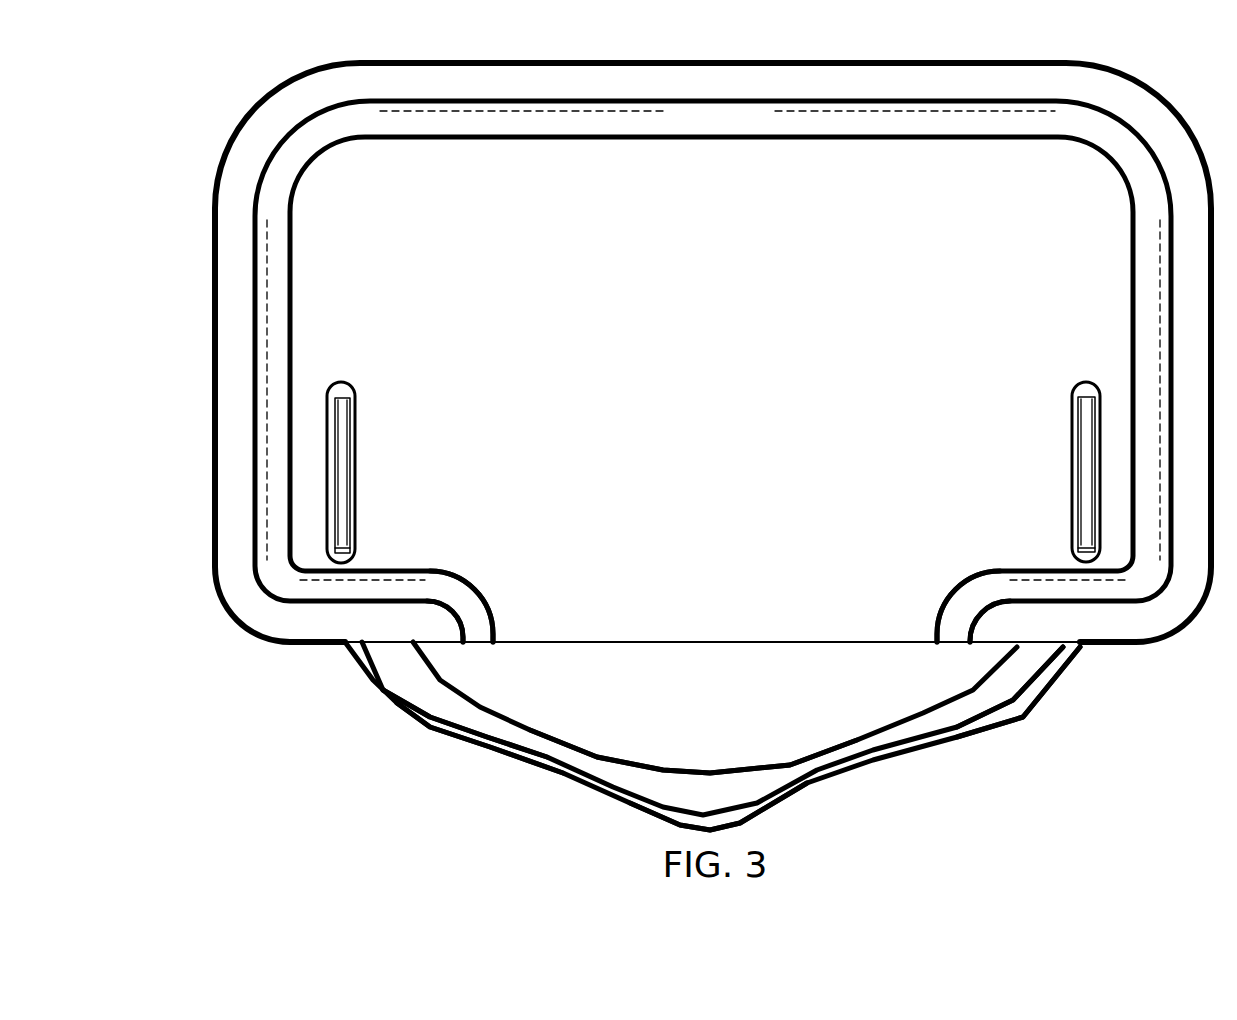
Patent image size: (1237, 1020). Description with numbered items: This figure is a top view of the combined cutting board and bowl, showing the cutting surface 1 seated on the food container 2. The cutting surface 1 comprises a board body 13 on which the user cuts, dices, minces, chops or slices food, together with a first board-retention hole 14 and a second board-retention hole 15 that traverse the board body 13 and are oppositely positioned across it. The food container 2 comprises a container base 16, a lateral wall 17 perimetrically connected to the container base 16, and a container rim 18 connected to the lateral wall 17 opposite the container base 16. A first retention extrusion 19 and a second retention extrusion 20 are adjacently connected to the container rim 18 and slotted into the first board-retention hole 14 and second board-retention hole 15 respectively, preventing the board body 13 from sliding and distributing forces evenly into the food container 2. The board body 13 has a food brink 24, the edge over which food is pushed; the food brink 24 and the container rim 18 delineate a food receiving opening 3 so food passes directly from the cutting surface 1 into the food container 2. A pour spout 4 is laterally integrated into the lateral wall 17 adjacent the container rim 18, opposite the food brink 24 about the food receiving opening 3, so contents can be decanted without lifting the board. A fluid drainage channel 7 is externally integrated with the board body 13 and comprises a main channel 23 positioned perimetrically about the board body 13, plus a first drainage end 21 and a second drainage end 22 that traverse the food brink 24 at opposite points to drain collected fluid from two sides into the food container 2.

The cutting surface 1 is at (192, 69).
The food container 2 is at (318, 688).
The food receiving opening 3 is at (798, 655).
The pour spout 4 is at (717, 800).
The fluid drainage channel 7 is at (318, 333).
The board body 13 is at (691, 377).
The first board-retention hole 14 is at (342, 388).
The second board-retention hole 15 is at (1086, 388).
The container base 16 is at (700, 695).
The lateral wall 17 is at (1010, 680).
The container rim 18 is at (490, 748).
The first retention extrusion 19 is at (345, 445).
The second retention extrusion 20 is at (1083, 465).
The first drainage end 21 is at (472, 637).
The second drainage end 22 is at (957, 645).
The main channel 23 is at (705, 120).
The food brink 24 is at (720, 641).